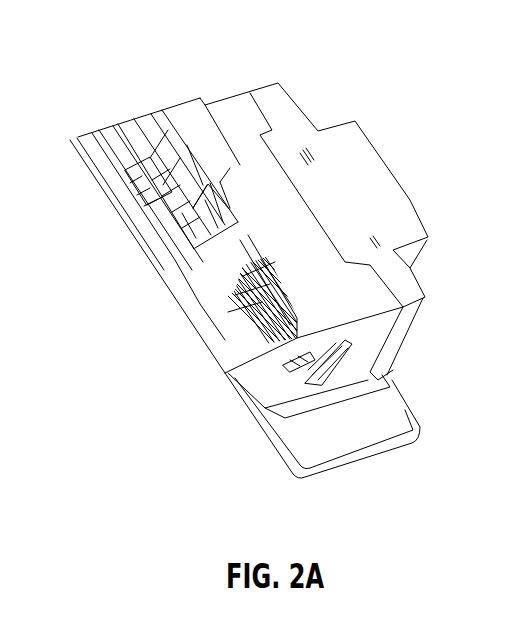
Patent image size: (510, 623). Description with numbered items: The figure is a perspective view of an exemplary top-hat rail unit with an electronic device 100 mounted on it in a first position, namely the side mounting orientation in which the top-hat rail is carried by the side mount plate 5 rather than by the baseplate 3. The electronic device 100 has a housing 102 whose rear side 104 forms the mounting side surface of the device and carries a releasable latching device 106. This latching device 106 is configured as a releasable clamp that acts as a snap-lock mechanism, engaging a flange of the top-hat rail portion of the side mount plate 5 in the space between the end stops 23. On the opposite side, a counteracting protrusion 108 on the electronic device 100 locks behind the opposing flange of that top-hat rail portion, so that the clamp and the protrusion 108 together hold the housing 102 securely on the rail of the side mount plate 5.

The electronic device 100 is at (387, 148).
The housing 102 is at (223, 137).
The rear side 104 is at (153, 182).
The latching device 106 is at (245, 345).
The protrusion 108 is at (186, 236).
The baseplate 3 is at (133, 135).
The side mount plate 5 is at (200, 265).
The end stops 23 is at (193, 212).